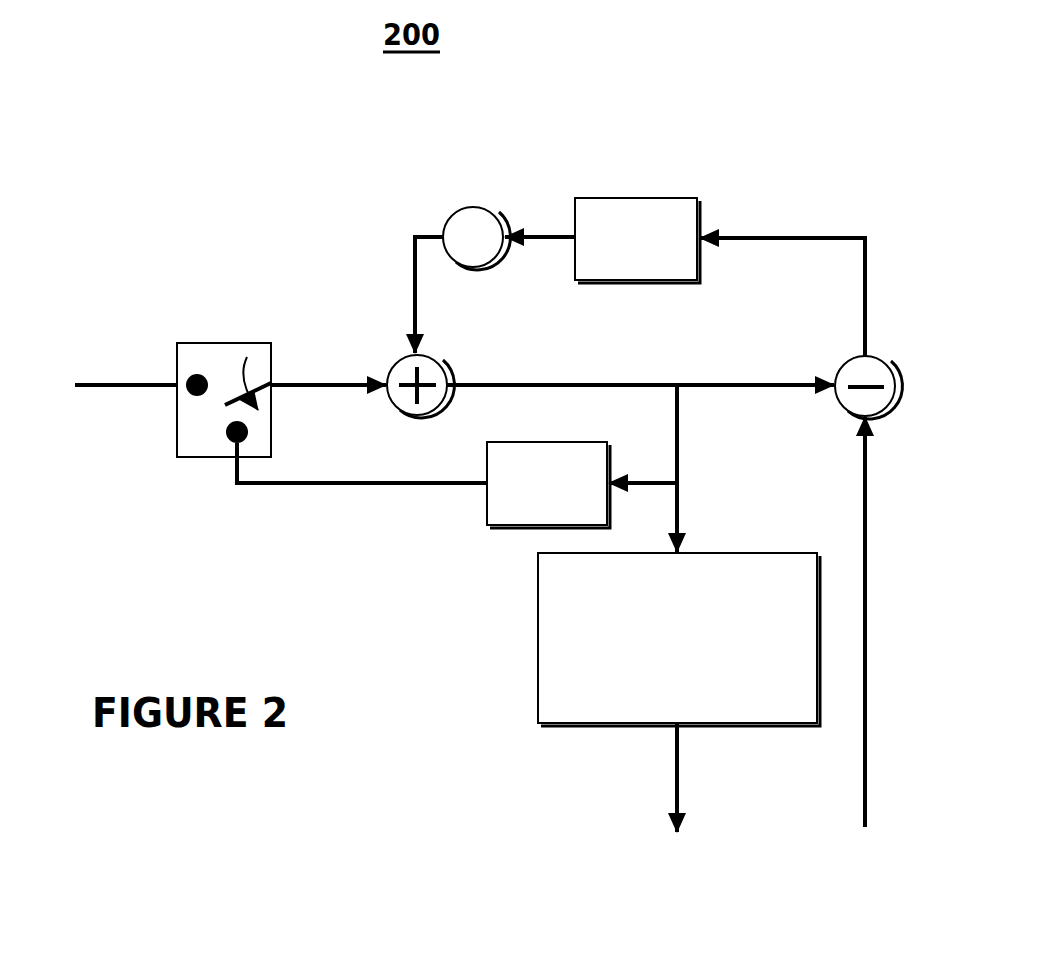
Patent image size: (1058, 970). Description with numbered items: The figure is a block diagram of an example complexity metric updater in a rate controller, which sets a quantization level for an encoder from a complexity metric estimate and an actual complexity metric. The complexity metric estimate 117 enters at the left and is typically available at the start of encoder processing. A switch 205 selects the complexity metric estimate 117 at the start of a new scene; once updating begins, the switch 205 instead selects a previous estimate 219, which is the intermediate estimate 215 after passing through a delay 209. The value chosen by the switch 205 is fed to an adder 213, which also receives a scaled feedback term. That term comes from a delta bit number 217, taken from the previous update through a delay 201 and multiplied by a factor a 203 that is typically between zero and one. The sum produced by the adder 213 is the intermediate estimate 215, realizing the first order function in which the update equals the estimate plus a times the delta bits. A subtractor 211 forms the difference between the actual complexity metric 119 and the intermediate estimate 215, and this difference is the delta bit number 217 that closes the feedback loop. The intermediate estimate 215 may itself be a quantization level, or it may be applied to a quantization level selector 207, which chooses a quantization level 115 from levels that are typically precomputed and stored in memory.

The complexity metric estimate 117 is at (103, 380).
The switch 205 is at (218, 343).
The adder 213 is at (445, 368).
The scaling factor a 203 is at (494, 207).
The delay 201 is at (625, 198).
The delta bit number 217 is at (788, 232).
The subtractor 211 is at (897, 373).
The intermediate estimate 215 is at (625, 382).
The quantization level selector 207 is at (728, 548).
The delay 209 is at (487, 510).
The previous estimate 219 is at (330, 477).
The quantization level 115 is at (678, 752).
The actual complexity metric 119 is at (865, 753).